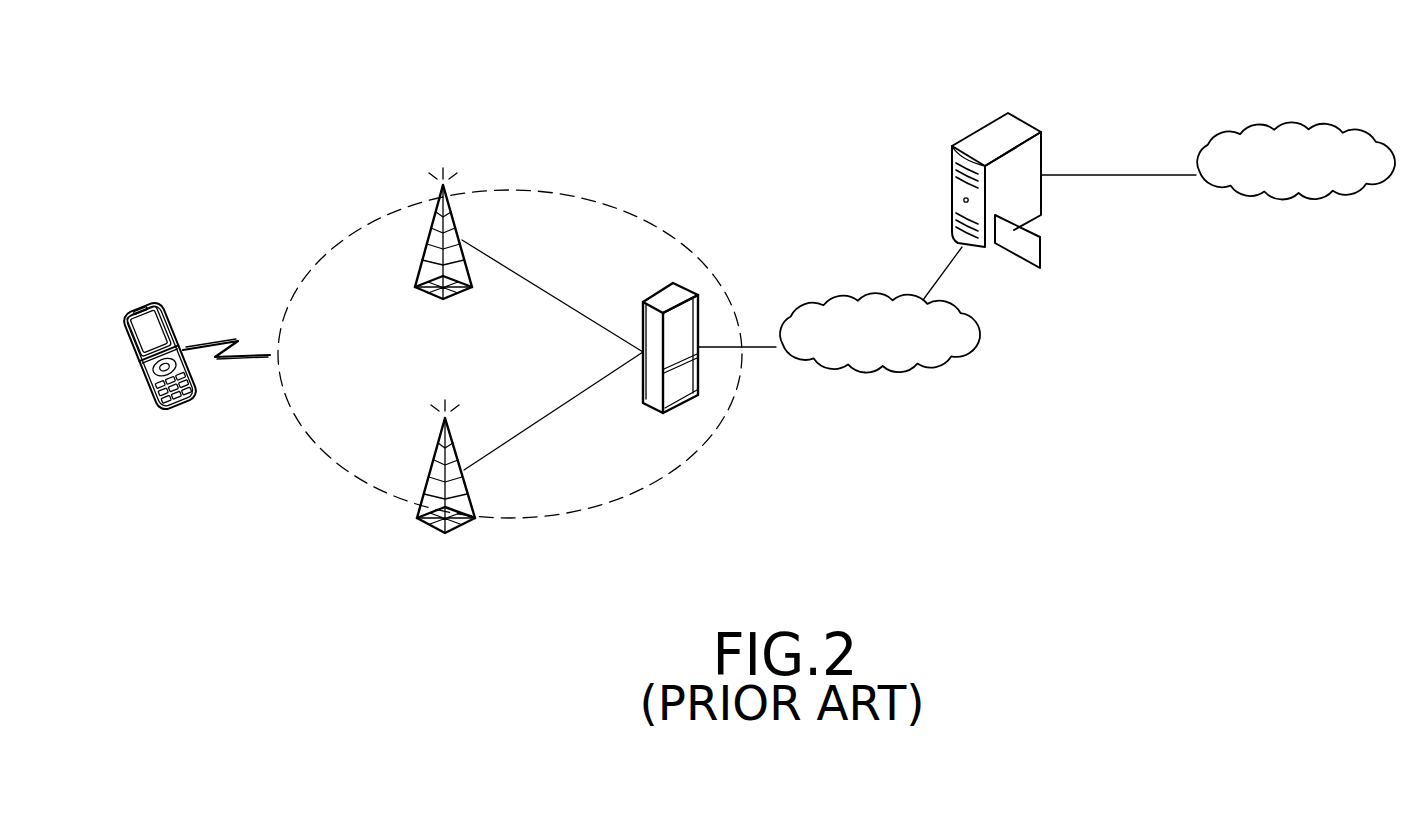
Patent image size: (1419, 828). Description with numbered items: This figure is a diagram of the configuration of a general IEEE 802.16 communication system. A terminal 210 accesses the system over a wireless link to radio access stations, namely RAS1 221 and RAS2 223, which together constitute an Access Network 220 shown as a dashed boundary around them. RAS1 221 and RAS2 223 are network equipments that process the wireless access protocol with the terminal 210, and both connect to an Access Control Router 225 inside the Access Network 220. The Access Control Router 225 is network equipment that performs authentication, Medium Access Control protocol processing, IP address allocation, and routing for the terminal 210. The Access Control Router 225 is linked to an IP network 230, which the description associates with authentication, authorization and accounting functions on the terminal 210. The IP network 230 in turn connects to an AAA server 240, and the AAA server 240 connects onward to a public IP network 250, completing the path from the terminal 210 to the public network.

The terminal 210 is at (143, 303).
The Access Network 220 is at (509, 190).
The RAS1 221 is at (460, 220).
The RAS2 223 is at (470, 488).
The Access Control Router 225 is at (652, 301).
The IP network 230 is at (873, 294).
The AAA server 240 is at (1025, 123).
The public IP network 250 is at (1293, 123).